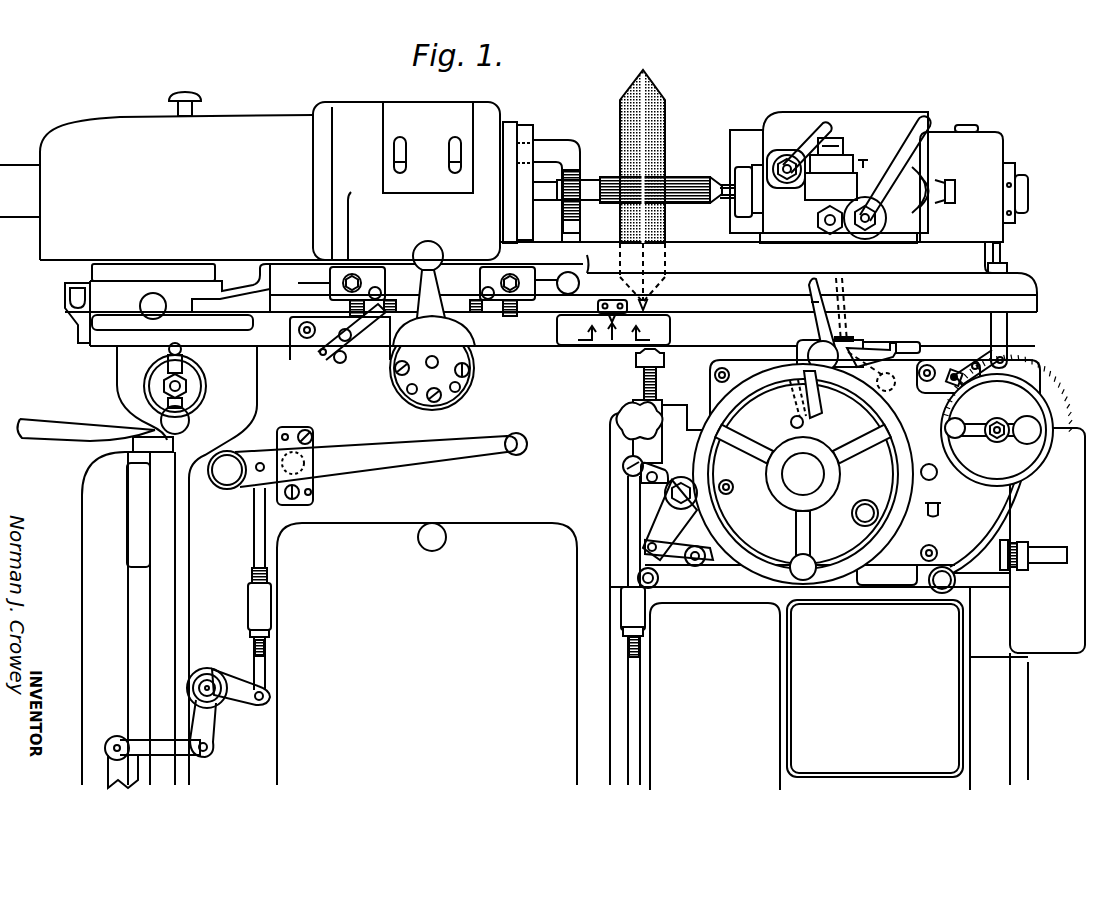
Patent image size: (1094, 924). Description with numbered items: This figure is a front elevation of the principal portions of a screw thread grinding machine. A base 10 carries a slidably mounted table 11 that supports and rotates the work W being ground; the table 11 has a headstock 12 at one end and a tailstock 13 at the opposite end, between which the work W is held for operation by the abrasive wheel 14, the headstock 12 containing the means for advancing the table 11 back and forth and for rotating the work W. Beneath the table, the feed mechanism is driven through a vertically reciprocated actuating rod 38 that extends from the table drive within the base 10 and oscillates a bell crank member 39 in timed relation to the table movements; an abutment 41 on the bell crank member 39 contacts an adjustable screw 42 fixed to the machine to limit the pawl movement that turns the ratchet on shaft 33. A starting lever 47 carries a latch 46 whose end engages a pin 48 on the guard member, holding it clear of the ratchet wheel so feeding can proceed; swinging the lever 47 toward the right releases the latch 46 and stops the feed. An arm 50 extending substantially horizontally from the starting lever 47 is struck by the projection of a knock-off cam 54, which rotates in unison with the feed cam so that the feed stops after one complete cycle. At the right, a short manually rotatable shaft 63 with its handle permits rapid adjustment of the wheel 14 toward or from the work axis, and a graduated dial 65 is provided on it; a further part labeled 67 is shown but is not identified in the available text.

The base 10 is at (560, 500).
The table 11 is at (285, 275).
The headstock 12 is at (483, 120).
The tailstock 13 is at (817, 183).
The abrasive wheel 14 is at (667, 130).
The work W is at (668, 184).
The shaft 33 is at (790, 473).
The actuating rod 38 is at (636, 691).
The bell crank member 39 is at (660, 527).
The abutment 41 is at (655, 487).
The adjustable screw 42 is at (640, 389).
The latch 46 is at (846, 409).
The starting lever 47 is at (812, 318).
The pin 48 is at (791, 424).
The arm 50 is at (865, 358).
The knock-off cam 54 is at (898, 342).
The manually rotatable shaft 63 is at (983, 420).
The graduated dial 65 is at (980, 480).
The link 67 is at (985, 355).